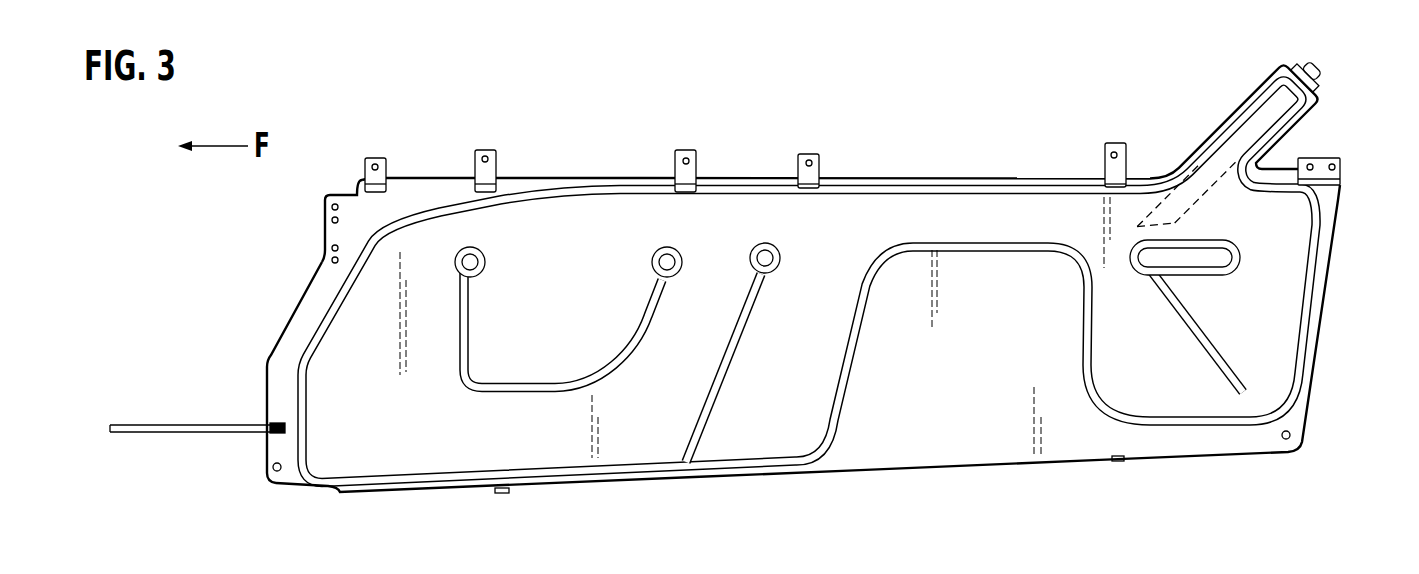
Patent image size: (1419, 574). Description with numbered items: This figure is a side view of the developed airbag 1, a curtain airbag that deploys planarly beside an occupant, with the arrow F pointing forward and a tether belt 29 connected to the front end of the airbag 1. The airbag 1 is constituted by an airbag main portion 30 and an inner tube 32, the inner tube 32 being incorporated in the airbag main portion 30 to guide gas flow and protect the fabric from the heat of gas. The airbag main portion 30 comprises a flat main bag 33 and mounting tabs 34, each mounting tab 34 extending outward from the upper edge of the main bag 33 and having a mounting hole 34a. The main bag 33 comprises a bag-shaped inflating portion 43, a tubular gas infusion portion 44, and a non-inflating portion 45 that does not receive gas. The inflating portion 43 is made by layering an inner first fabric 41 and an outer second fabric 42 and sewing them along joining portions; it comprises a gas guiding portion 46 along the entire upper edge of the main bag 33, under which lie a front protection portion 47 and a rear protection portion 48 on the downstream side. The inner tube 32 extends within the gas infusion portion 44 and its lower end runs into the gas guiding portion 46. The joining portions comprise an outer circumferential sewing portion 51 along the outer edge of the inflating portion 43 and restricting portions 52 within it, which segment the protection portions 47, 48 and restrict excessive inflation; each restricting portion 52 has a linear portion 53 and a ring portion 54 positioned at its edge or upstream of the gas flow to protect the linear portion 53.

The airbag 1 is at (566, 114).
The tether belt 29 is at (160, 423).
The airbag main portion 30 is at (1041, 210).
The inner tube 32 is at (1193, 182).
The main bag 33 is at (966, 210).
The mounting tab 34 is at (368, 158).
The mounting hole 34a is at (376, 164).
The first fabric 41 is at (793, 433).
The second fabric 42 is at (744, 440).
The inflating portion 43 is at (640, 445).
The gas infusion portion 44 is at (1243, 105).
The non-inflating portion 45 is at (345, 232).
The gas guiding portion 46 is at (896, 210).
The front protection portion 47 is at (405, 455).
The rear protection portion 48 is at (1187, 402).
The outer circumferential sewing portion 51 is at (616, 185).
The restricting portion 52 is at (640, 320).
The linear portion 53 is at (548, 383).
The ring portion 54 is at (487, 262).